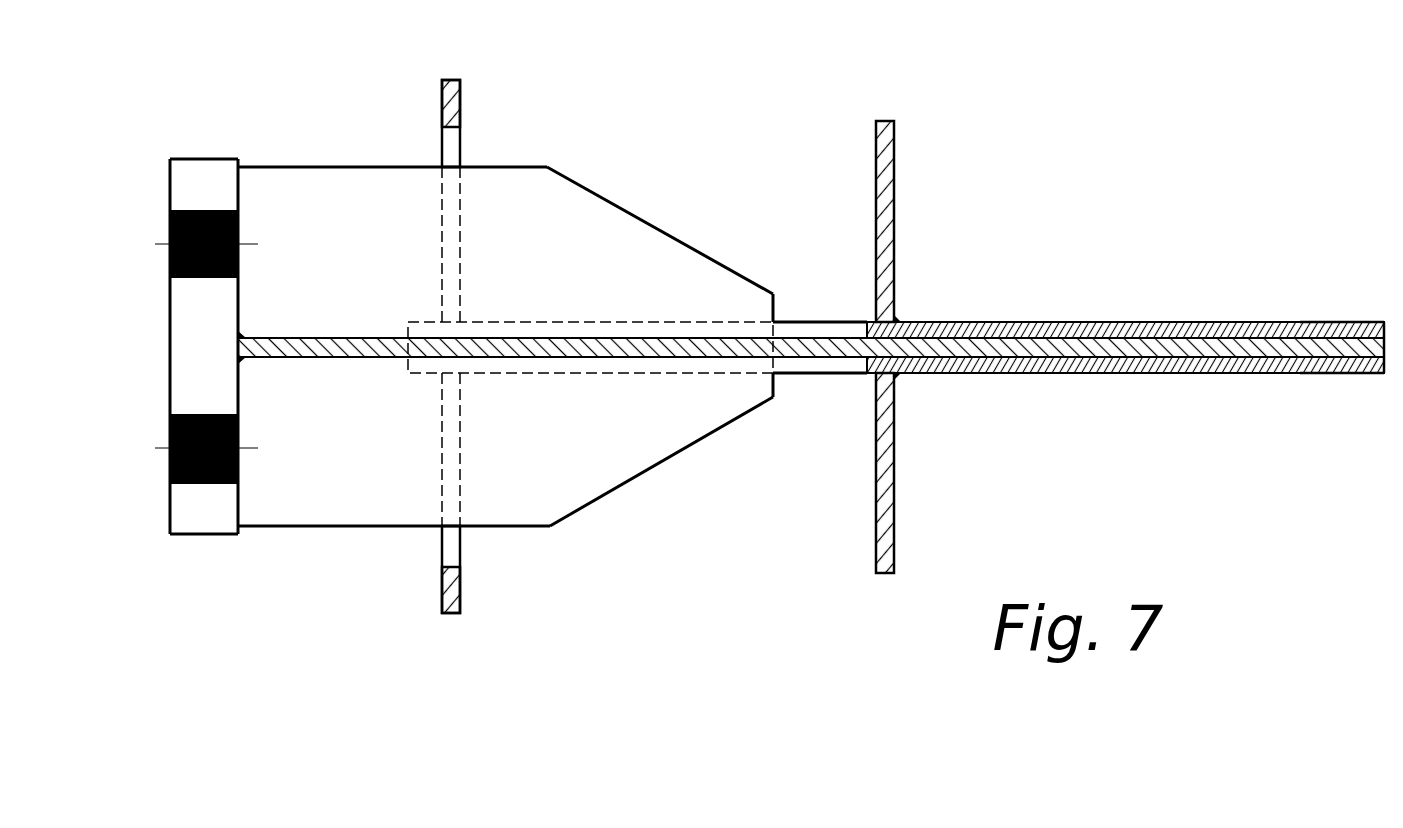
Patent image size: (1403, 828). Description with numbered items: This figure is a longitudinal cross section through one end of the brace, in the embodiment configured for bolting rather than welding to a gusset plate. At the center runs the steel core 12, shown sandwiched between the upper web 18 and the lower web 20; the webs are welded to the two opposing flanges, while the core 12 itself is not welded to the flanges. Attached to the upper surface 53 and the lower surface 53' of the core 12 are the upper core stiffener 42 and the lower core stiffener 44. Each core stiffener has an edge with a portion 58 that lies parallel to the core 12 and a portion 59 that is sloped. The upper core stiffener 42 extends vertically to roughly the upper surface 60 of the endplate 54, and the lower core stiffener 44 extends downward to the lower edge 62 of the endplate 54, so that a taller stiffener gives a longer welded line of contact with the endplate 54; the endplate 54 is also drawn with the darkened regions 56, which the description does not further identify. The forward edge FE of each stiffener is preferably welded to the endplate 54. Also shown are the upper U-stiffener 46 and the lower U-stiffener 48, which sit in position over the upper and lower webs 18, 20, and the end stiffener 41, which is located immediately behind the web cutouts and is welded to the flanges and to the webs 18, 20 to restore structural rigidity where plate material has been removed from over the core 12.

The core 12 is at (1318, 346).
The upper web 18 is at (1384, 322).
The lower web 20 is at (1384, 373).
The end stiffener 41 is at (893, 168).
The upper core stiffener 42 is at (524, 190).
The lower core stiffener 44 is at (543, 497).
The upper U-stiffener 46 is at (442, 92).
The lower U-stiffener 48 is at (443, 590).
The upper surface of the core 53 is at (811, 309).
The lower surface of the core 53' is at (289, 380).
The endplate 54 is at (222, 316).
The magnets 56 is at (170, 228).
The parallel edge portion 58 is at (337, 167).
The sloped edge portion 59 is at (720, 262).
The upper surface of the endplate 60 is at (220, 163).
The lower edge of the endplate 62 is at (190, 536).
The forward edge FE is at (258, 527).